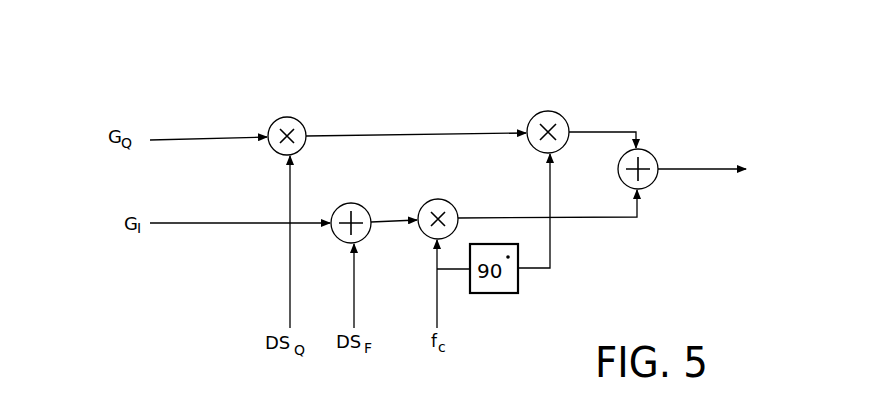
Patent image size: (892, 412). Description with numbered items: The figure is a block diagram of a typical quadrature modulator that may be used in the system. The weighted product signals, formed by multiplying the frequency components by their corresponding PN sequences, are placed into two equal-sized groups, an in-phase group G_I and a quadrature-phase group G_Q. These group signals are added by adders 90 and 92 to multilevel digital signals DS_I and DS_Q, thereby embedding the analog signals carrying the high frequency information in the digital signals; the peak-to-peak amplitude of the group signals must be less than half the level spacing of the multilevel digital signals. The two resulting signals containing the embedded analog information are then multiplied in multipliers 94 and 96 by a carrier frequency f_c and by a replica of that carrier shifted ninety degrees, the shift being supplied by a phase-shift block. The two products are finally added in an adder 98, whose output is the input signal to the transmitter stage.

The adder 90 is at (350, 202).
The adder 92 is at (301, 123).
The multiplier 94 is at (556, 110).
The multiplier 96 is at (453, 205).
The adder 98 is at (656, 153).